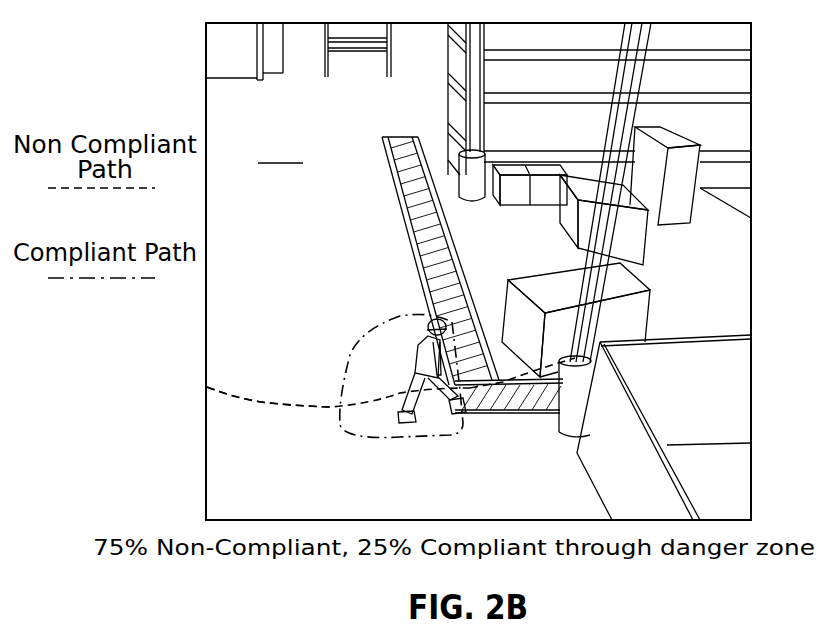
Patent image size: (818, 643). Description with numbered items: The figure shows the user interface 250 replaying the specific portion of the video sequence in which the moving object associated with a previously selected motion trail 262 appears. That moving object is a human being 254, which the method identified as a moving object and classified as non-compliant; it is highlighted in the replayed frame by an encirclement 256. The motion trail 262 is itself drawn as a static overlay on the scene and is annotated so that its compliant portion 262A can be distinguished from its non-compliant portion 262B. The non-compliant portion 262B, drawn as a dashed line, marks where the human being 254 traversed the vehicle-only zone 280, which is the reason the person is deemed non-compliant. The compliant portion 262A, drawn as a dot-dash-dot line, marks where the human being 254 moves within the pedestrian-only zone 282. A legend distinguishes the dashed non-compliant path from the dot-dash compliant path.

The user interface 250 is at (163, 1).
The vehicle-only zone 280 is at (280, 151).
The pedestrian-only zone 282 is at (448, 230).
The human being 254 is at (413, 353).
The encirclement 256 is at (355, 372).
The motion trail 262 is at (271, 392).
The compliant portion 262A is at (500, 388).
The non-compliant portion 262B is at (307, 408).